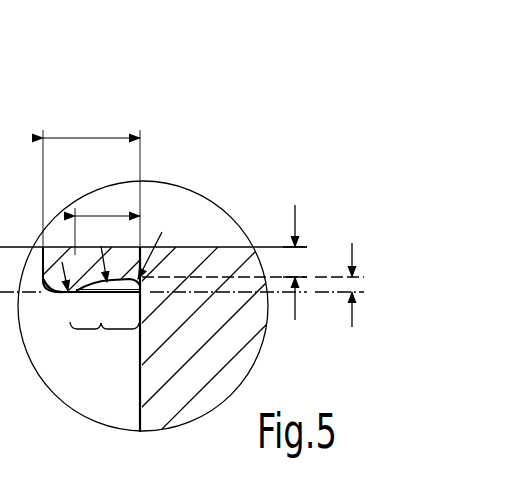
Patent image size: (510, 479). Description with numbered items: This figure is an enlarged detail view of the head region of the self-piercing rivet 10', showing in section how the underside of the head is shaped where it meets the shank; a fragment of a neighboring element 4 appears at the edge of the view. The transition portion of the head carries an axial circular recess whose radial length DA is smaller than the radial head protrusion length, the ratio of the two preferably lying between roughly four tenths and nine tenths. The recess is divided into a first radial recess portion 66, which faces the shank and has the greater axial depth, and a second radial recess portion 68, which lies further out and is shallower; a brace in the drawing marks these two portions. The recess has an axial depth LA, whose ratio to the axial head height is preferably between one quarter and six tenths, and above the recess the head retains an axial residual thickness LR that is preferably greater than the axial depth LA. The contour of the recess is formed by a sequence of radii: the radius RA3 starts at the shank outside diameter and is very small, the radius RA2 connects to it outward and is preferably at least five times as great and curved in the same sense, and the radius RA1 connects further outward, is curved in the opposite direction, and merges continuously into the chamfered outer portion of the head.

The self-piercing rivet 10' is at (17, 19).
The cylinder 4 is at (4, 110).
The first radial recess portion 66 is at (121, 335).
The second radial recess portion 68 is at (92, 333).
The radial length of the circular recess DA is at (101, 246).
The axial residual thickness LR is at (297, 263).
The axial depth LA is at (352, 283).
The radius RA1 is at (43, 300).
The radius RA2 is at (110, 231).
The radius RA3 is at (150, 258).